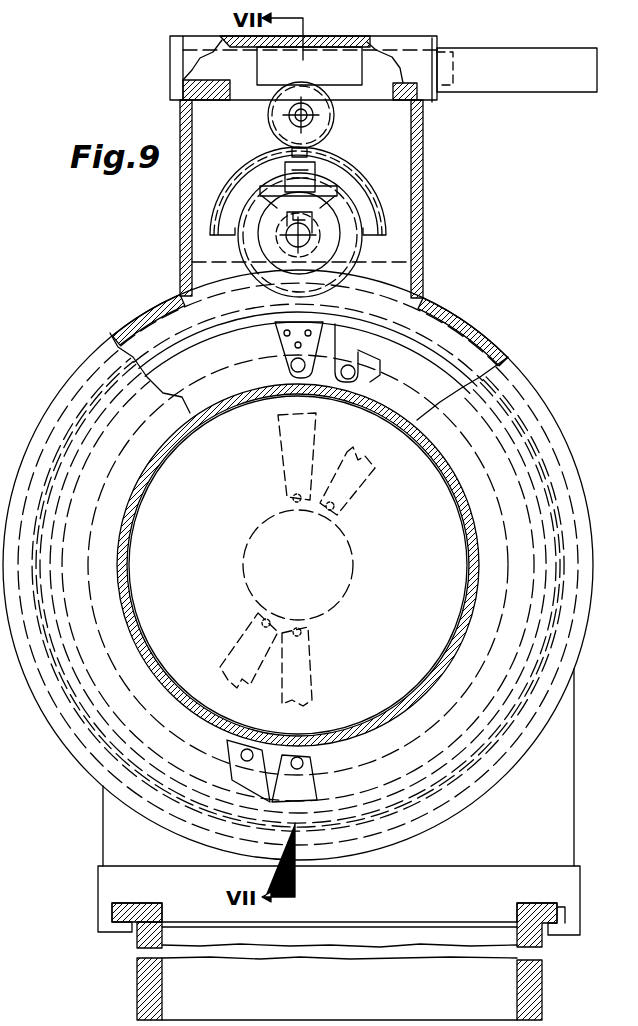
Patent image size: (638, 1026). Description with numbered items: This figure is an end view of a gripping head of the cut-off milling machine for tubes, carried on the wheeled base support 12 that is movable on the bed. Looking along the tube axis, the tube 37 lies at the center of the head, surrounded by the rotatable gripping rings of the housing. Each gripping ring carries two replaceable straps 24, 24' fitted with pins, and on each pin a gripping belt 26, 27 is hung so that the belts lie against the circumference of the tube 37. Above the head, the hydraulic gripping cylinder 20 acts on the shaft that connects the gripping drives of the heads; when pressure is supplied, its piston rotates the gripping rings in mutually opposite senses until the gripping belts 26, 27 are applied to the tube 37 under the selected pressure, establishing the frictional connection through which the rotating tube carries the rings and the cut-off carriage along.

The wheeled base support 12 is at (118, 883).
The gripping cylinder 20 is at (518, 80).
The replaceable strap 24 is at (270, 562).
The replaceable strap 24' is at (321, 563).
The gripping belt 26 is at (262, 392).
The gripping belt 27 is at (378, 362).
The tube 37 is at (467, 532).